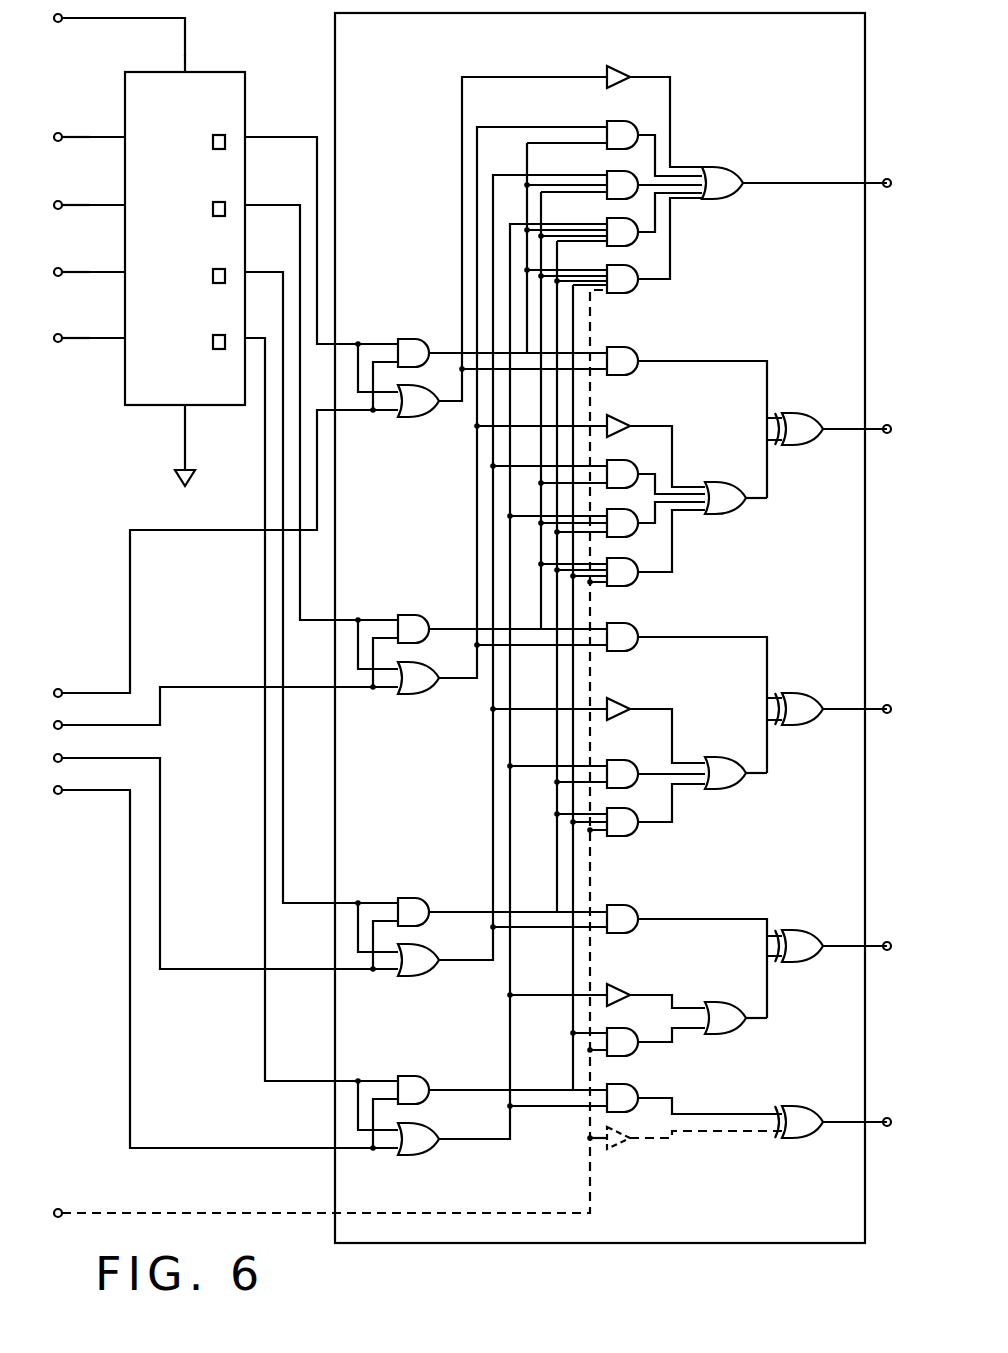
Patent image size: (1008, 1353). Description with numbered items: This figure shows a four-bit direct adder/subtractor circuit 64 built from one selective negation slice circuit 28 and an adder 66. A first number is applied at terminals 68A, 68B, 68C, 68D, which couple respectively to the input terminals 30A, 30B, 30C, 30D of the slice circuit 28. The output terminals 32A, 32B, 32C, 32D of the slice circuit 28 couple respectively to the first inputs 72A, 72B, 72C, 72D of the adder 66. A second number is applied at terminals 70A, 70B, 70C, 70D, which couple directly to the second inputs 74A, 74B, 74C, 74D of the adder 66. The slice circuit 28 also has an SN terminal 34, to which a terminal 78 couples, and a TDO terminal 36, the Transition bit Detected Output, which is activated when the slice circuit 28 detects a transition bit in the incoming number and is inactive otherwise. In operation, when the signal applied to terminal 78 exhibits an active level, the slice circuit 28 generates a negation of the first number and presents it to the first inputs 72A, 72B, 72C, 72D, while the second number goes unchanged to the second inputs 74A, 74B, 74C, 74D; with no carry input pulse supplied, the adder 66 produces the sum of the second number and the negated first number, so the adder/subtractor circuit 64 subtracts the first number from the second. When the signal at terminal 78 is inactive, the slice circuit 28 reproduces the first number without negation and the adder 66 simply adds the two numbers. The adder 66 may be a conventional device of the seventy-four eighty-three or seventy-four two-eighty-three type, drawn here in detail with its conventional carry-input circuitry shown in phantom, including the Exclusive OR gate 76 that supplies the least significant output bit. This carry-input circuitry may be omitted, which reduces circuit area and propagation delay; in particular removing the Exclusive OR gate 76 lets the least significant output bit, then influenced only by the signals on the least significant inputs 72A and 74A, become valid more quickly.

The selective negation slice circuit 28 is at (125, 405).
The SN terminal 34 is at (185, 72).
The TDO terminal 36 is at (175, 405).
The terminal 78 is at (62, 21).
The input terminal 30D is at (123, 132).
The input terminal 30C is at (123, 200).
The input terminal 30B is at (123, 268).
The input terminal 30A is at (123, 334).
The terminal 68D is at (121, 105).
The terminal 68C is at (121, 173).
The terminal 68B is at (121, 240).
The terminal 68A is at (121, 306).
The output terminal 32D is at (246, 136).
The output terminal 32C is at (246, 204).
The output terminal 32B is at (246, 271).
The output terminal 32A is at (247, 345).
The terminal 70D is at (62, 690).
The terminal 70C is at (62, 722).
The terminal 70B is at (85, 742).
The terminal 70A is at (62, 787).
The first input of adder 72D is at (340, 343).
The first input of adder 72C is at (340, 619).
The first input of adder 72B is at (340, 902).
The first input of adder 72A is at (340, 1080).
The second input of adder 74D is at (337, 410).
The second input of adder 74C is at (337, 687).
The second input of adder 74B is at (337, 969).
The second input of adder 74A is at (337, 1148).
The direct adder/subtractor circuit 64 is at (176, 1197).
The adder 66 is at (572, 1243).
The Exclusive OR gate 76 is at (800, 1140).